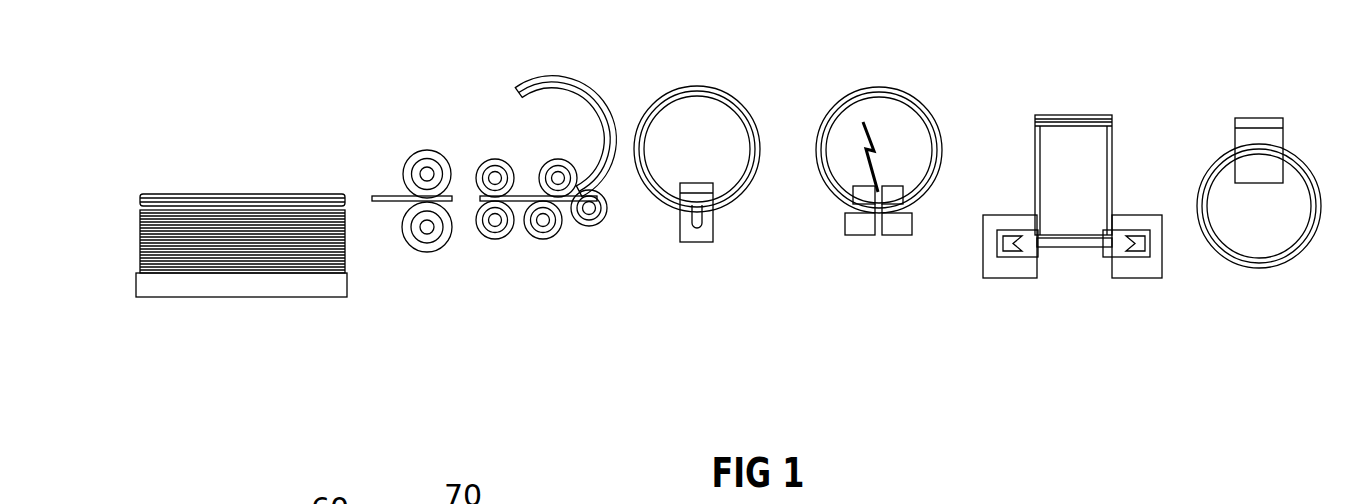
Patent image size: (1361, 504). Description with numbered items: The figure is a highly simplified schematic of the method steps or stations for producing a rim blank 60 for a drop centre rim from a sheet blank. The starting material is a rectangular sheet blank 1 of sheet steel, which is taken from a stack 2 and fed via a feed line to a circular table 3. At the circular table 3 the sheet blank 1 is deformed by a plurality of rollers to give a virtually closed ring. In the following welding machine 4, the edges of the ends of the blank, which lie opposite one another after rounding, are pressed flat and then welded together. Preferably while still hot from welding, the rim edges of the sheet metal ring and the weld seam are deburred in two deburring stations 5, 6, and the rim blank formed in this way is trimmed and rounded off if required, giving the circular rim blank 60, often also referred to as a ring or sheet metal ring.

The sheet blank 1 is at (220, 194).
The stack 2 is at (176, 321).
The circular table 3 is at (525, 274).
The welding machine 4 is at (772, 282).
The deburring station 5 is at (1068, 293).
The deburring station 6 is at (1240, 289).
The rim blank 60 is at (1194, 139).